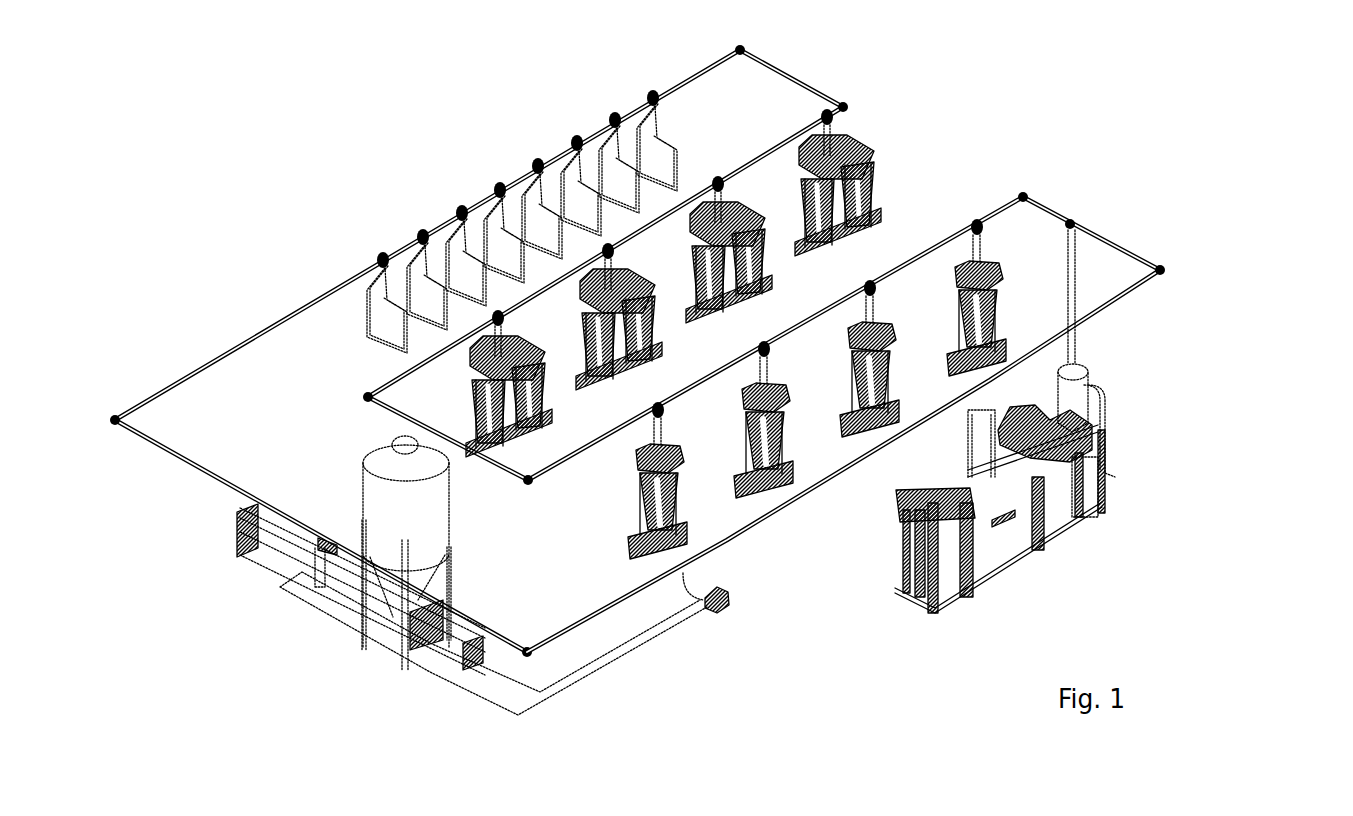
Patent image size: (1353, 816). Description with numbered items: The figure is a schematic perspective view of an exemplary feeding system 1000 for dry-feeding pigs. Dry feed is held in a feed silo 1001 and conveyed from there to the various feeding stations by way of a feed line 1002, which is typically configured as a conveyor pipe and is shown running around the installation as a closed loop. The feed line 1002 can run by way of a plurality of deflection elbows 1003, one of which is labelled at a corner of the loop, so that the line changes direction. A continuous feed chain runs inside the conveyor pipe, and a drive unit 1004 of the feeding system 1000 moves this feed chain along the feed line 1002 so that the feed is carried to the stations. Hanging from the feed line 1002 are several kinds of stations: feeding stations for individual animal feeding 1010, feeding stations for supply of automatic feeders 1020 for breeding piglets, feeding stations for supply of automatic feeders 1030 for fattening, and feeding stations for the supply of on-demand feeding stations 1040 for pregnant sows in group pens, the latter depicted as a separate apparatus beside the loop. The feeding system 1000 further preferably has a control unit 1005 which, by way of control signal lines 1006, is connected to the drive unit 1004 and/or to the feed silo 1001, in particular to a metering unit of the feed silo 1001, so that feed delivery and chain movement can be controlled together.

The feeding system 1000 is at (200, 208).
The feed silo 1001 is at (412, 522).
The feed line 1002 is at (264, 330).
The deflection elbows 1003 is at (1170, 272).
The drive unit 1004 is at (283, 552).
The control unit 1005 is at (722, 614).
The control signal lines 1006 is at (605, 674).
The feeding stations for individual animal feeding 1010 is at (482, 182).
The feeding stations for supply of automatic feeders for breeding piglets 1020 is at (865, 195).
The feeding stations for supply of automatic feeders for fattening 1030 is at (1015, 262).
The feeding stations for supply of on-demand feeding stations 1040 is at (1124, 436).